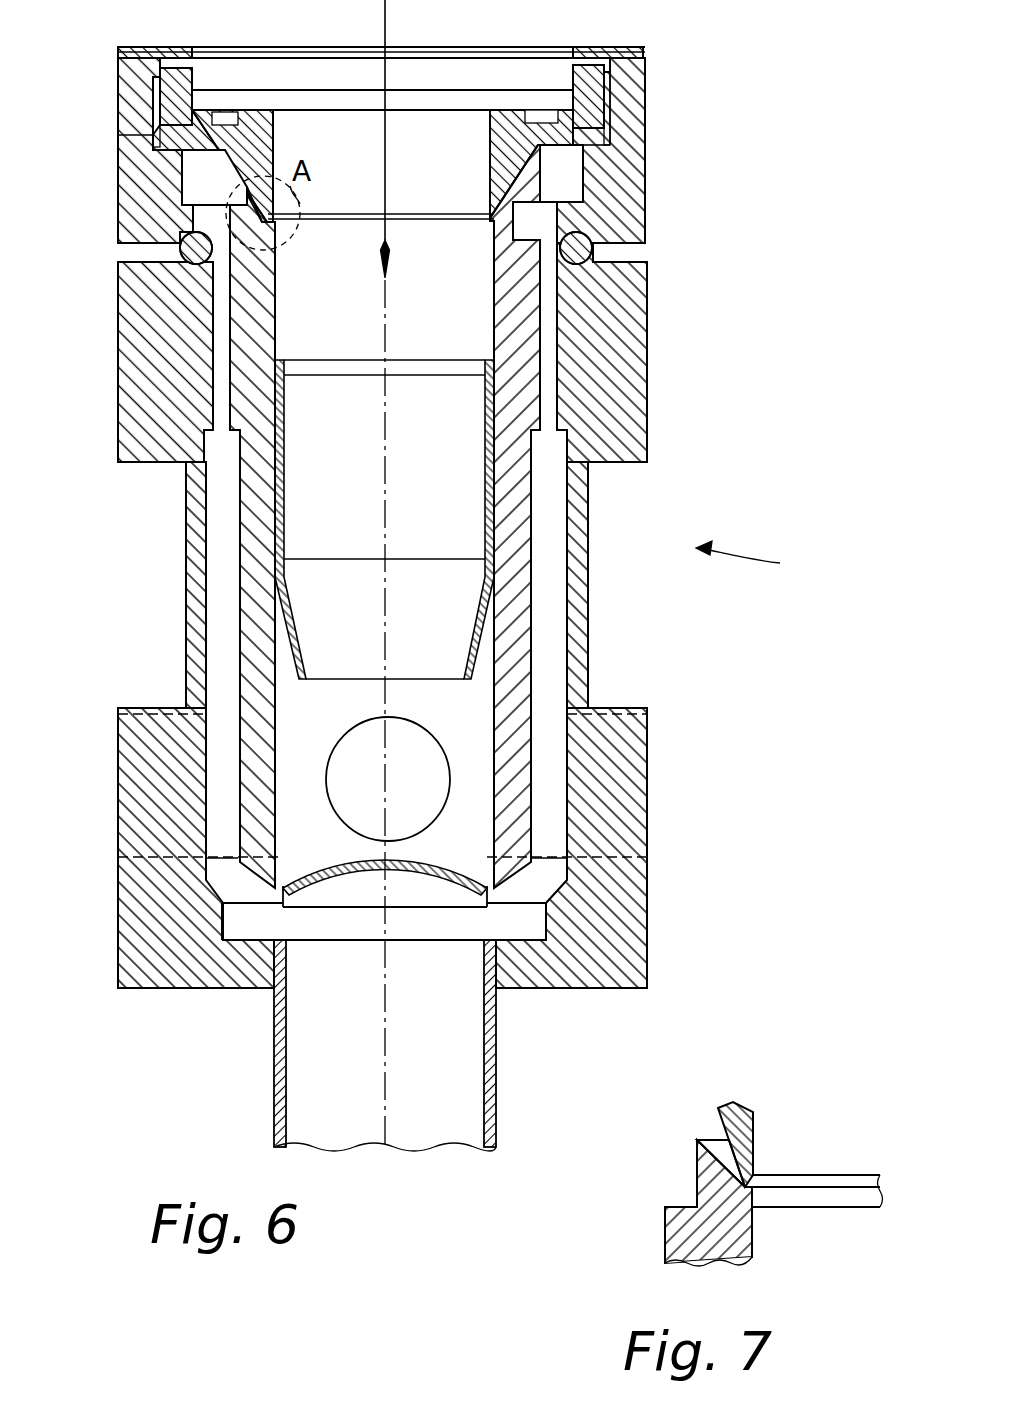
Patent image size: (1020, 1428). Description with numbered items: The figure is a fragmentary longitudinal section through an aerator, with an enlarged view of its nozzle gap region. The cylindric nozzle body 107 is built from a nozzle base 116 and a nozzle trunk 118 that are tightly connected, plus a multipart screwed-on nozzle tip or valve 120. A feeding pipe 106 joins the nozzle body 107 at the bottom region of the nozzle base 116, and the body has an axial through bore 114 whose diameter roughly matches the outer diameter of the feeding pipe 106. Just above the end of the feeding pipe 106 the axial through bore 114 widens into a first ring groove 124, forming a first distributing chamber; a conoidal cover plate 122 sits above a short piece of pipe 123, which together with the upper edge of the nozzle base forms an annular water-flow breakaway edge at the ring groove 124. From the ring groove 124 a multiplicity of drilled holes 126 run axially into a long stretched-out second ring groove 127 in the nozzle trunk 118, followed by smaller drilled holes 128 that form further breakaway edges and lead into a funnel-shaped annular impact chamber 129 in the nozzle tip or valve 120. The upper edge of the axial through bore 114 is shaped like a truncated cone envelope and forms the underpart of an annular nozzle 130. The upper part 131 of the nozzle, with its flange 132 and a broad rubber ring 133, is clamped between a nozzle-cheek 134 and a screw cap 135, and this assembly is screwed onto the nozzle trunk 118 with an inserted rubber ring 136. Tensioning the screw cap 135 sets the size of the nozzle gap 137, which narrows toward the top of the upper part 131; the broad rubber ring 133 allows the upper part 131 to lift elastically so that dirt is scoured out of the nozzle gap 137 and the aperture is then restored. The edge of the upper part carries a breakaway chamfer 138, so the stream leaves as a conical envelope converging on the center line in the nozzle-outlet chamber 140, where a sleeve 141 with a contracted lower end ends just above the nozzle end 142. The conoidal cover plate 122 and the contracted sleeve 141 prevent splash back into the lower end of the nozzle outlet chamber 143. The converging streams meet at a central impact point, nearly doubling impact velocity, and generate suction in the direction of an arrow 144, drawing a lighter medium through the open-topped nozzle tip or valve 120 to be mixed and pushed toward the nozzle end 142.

In FIG. 6, the feeding pipe 106 is at (302, 1074).
In FIG. 6, the nozzle body 107 is at (765, 557).
In FIG. 6, the axial through bore 114 is at (293, 697).
In FIG. 6, the nozzle base 116 is at (624, 908).
In FIG. 6, the nozzle trunk 118 is at (581, 616).
In FIG. 6, the nozzle tip or valve 120 is at (647, 177).
In FIG. 6, the conoidal cover plate 122 is at (363, 880).
In FIG. 6, the short piece of pipe 123 is at (477, 898).
In FIG. 6, the first ring groove 124 is at (518, 927).
In FIG. 6, the drilled holes 126 is at (547, 780).
In FIG. 6, the second ring groove 127 is at (549, 683).
In FIG. 6, the drilled holes 128 is at (549, 396).
In FIG. 6, the impact chamber 129 is at (572, 172).
In FIG. 7, the impact chamber 129 is at (682, 1193).
In FIG. 6, the nozzle 130 is at (500, 220).
In FIG. 6, the upper part of the nozzle 131 is at (153, 150).
In FIG. 7, the upper part of the nozzle 131 is at (743, 1130).
In FIG. 6, the flange 132 is at (614, 107).
In FIG. 6, the broad rubber ring 133 is at (616, 45).
In FIG. 6, the nozzle-cheek 134 is at (626, 87).
In FIG. 6, the screw cap 135 is at (620, 212).
In FIG. 6, the rubber ring 136 is at (581, 256).
In FIG. 7, the nozzle gap 137 is at (757, 1190).
In FIG. 7, the breakaway chamfer 138 is at (848, 1180).
In FIG. 6, the nozzle-outlet chamber 140 is at (496, 355).
In FIG. 6, the sleeve 141 is at (454, 507).
In FIG. 6, the nozzle end 142 is at (358, 816).
In FIG. 6, the nozzle outlet chamber 143 is at (469, 832).
In FIG. 6, the arrow 144 is at (384, 12).